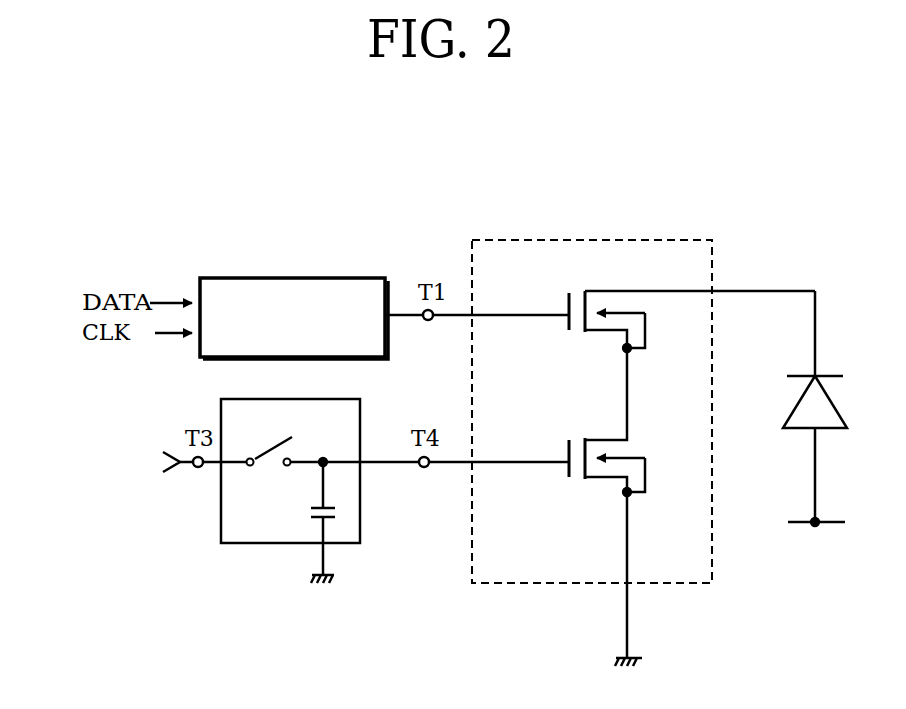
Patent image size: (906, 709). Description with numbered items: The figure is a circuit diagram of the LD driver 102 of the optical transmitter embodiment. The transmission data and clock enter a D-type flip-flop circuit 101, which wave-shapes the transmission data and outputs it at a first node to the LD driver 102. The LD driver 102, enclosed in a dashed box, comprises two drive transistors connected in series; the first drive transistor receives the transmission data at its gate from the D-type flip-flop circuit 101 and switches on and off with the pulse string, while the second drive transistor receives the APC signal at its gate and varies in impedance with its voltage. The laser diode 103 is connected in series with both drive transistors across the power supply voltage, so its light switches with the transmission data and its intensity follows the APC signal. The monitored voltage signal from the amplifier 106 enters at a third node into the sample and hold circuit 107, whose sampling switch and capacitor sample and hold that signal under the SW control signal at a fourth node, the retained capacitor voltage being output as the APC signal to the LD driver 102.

The D-type flip-flop circuit 101 is at (285, 279).
The LD driver 102 is at (491, 241).
The laser diode 103 is at (800, 392).
The amplifier 106 is at (135, 469).
The sample and hold circuit 107 is at (258, 544).